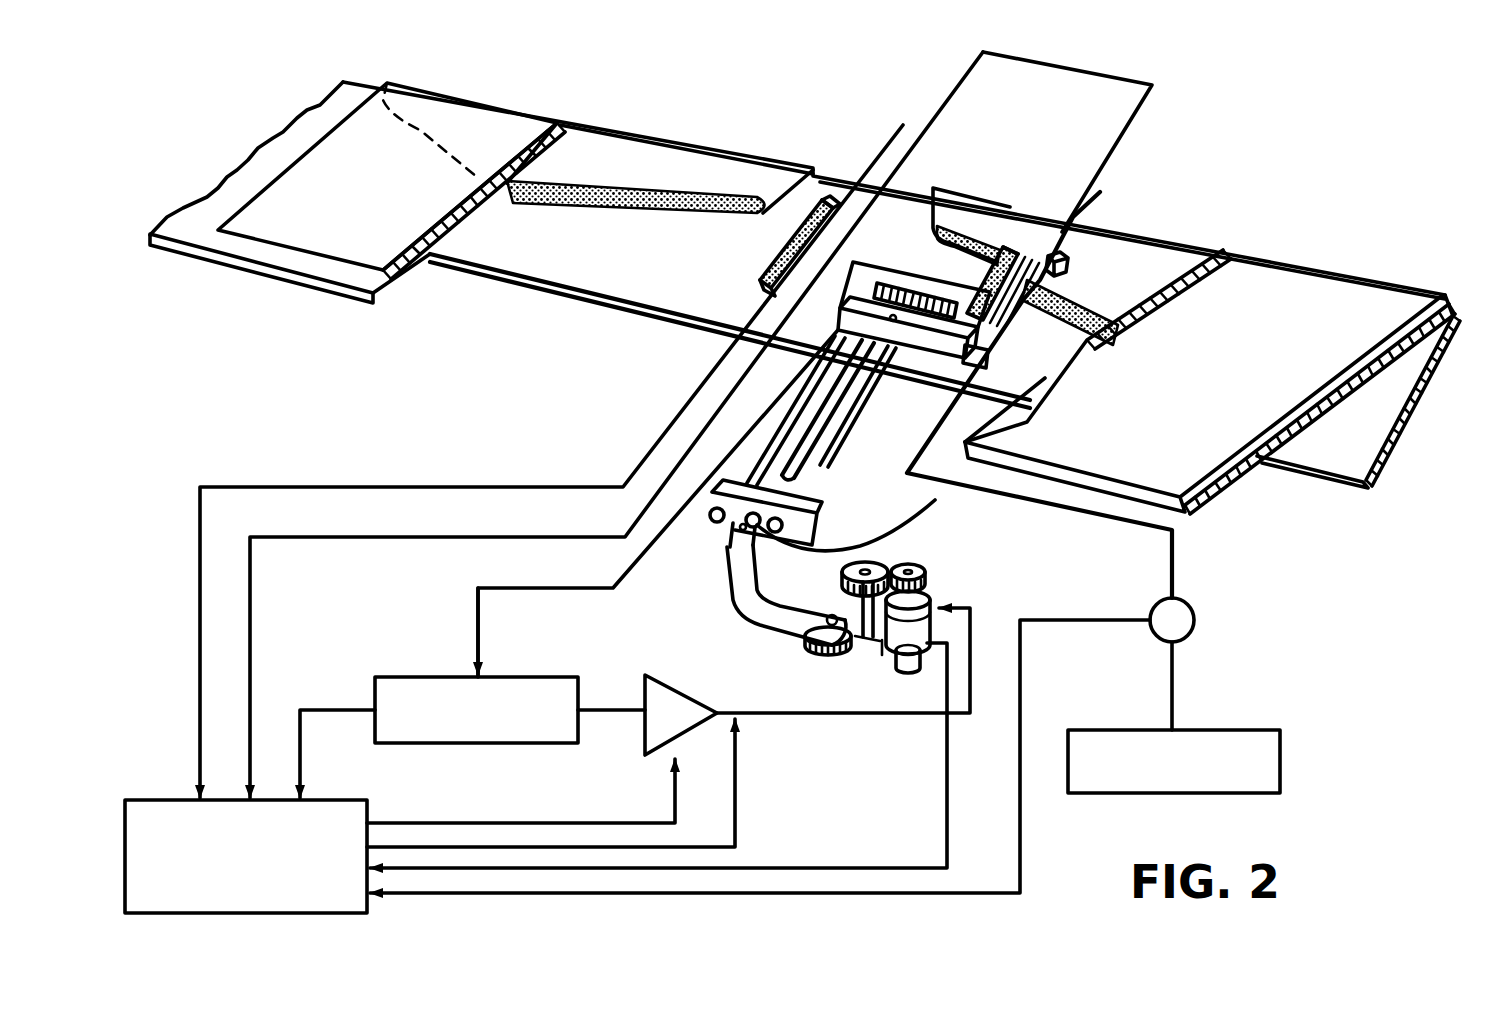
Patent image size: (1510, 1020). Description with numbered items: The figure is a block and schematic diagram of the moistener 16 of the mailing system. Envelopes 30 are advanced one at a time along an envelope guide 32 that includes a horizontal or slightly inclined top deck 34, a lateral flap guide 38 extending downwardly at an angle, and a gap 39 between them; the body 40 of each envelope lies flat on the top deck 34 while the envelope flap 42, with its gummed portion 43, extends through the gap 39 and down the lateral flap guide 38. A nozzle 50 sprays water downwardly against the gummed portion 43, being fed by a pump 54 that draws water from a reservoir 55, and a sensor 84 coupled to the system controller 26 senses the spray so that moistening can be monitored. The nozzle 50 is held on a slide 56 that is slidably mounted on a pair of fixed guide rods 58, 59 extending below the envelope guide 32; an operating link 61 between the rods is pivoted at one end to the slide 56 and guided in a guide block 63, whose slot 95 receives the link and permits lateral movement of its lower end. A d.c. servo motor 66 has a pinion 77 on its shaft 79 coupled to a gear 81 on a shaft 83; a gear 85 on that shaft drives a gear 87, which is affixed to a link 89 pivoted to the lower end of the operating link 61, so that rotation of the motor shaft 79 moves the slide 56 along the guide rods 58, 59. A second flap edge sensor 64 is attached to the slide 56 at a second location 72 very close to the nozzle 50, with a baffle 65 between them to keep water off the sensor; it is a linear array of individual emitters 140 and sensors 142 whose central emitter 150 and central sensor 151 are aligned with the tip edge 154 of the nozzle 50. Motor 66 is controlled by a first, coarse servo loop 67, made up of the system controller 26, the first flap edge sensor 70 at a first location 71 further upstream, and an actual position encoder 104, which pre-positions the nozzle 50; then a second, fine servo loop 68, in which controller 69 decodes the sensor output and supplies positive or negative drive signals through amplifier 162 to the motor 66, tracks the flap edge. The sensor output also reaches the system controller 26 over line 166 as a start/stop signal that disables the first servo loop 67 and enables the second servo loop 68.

The moistener 16 is at (993, 125).
The system controller 26 is at (180, 800).
The envelope 30 is at (301, 256).
The envelope guide 32 is at (222, 183).
The top deck 34 is at (223, 242).
The lateral flap guide 38 is at (565, 268).
The gap 39 is at (1453, 330).
The body 40 is at (417, 194).
The envelope flap 42 is at (655, 152).
The gummed portion 43 is at (613, 197).
The nozzle 50 is at (1025, 304).
The pump 54 is at (1197, 618).
The reservoir 55 is at (1123, 728).
The slide 56 is at (932, 345).
The guide rod 58 is at (753, 467).
The guide rod 59 is at (858, 418).
The operating link 61 is at (812, 463).
The guide block 63 is at (905, 510).
The second flap edge sensor 64 is at (975, 269).
The baffle 65 is at (1100, 192).
The d.c. servo motor 66 is at (883, 660).
The first servo loop 67 is at (830, 737).
The second servo loop 68 is at (436, 662).
The controller 69 is at (558, 677).
The first flap edge sensor 70 is at (758, 266).
The first location 71 is at (830, 200).
The second location 72 is at (1013, 253).
The pinion 77 is at (925, 565).
The shaft 79 is at (935, 605).
The gear 81 is at (880, 560).
The shaft 83 is at (847, 597).
The sensor 84 is at (1068, 268).
The gear 85 is at (867, 657).
The gear 87 is at (807, 643).
The link 89 is at (753, 590).
The slot 95 is at (800, 478).
The actual position encoder 104 is at (903, 657).
The emitter 140 is at (813, 213).
The sensor 142 is at (857, 222).
The central emitter 150 is at (987, 250).
The central sensor 151 is at (1010, 300).
The tip edge 154 is at (1160, 280).
The amplifier 162 is at (670, 684).
The line 166 is at (333, 707).